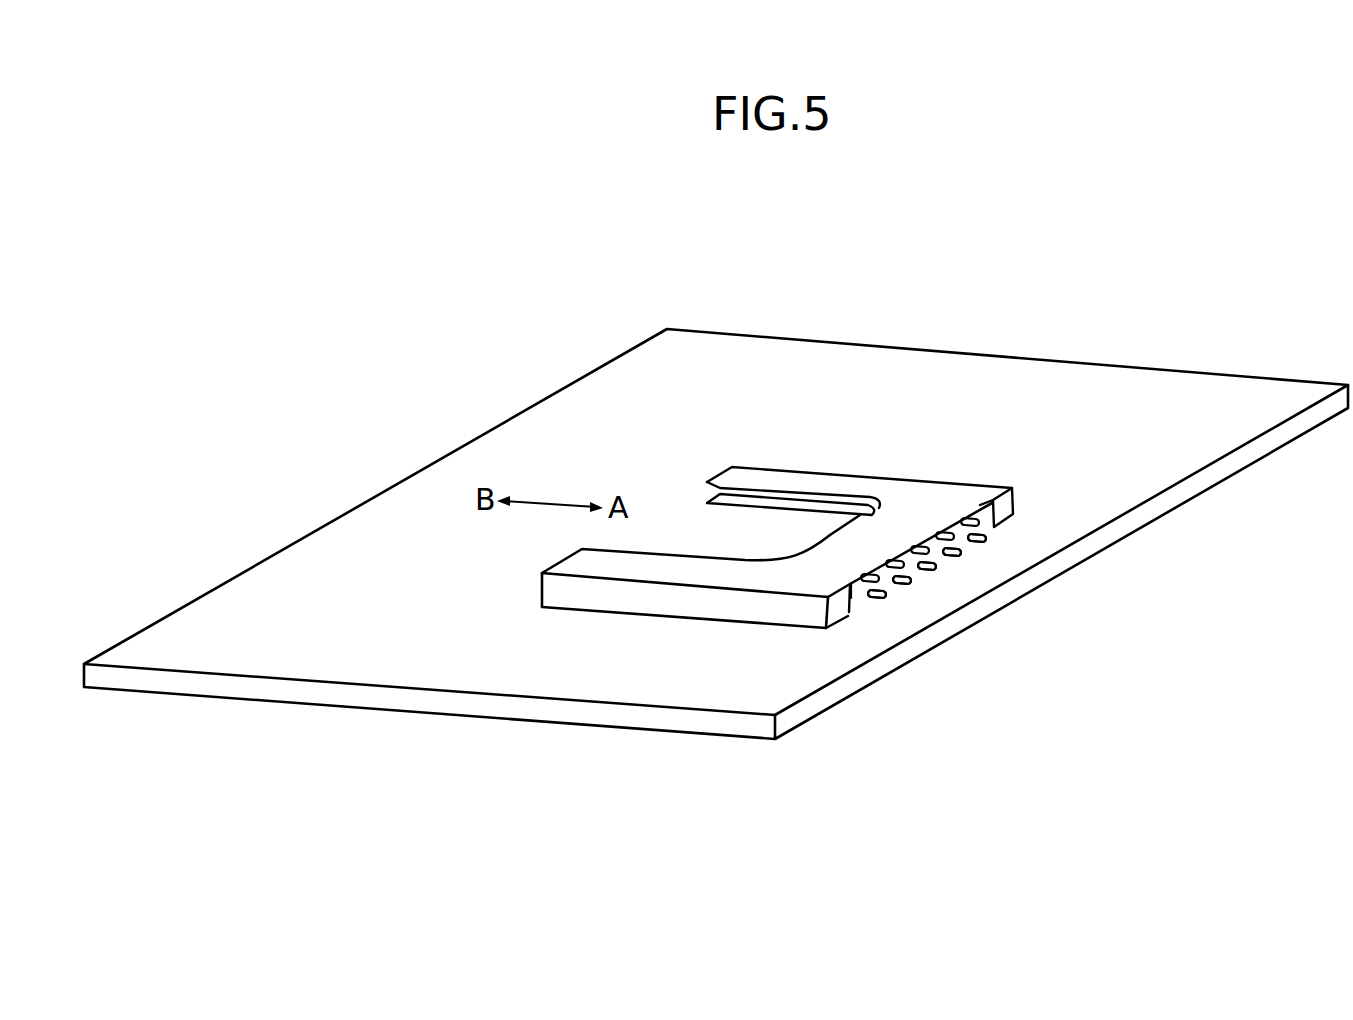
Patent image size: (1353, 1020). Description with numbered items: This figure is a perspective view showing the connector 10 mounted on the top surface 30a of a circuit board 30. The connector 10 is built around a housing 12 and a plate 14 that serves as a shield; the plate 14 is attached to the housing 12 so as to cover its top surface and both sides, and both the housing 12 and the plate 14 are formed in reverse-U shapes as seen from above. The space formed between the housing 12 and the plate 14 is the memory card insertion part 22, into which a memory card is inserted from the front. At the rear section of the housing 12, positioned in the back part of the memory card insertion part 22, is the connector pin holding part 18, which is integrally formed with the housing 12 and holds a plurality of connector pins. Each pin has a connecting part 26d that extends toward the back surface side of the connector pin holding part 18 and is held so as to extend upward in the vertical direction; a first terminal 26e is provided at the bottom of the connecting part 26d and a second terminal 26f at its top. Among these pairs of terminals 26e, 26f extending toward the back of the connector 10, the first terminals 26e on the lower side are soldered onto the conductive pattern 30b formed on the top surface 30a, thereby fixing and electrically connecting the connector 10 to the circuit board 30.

The connector 10 is at (859, 438).
The housing 12 is at (1010, 506).
The plate 14 is at (928, 490).
The connector pin holding part 18 is at (837, 613).
The memory card insertion part 22 is at (767, 492).
The connecting part 26d is at (853, 590).
The first terminal 26e is at (993, 538).
The second terminal 26f is at (870, 567).
The circuit board 30 is at (716, 502).
The top surface 30a is at (1028, 375).
The conductive pattern 30b is at (885, 601).